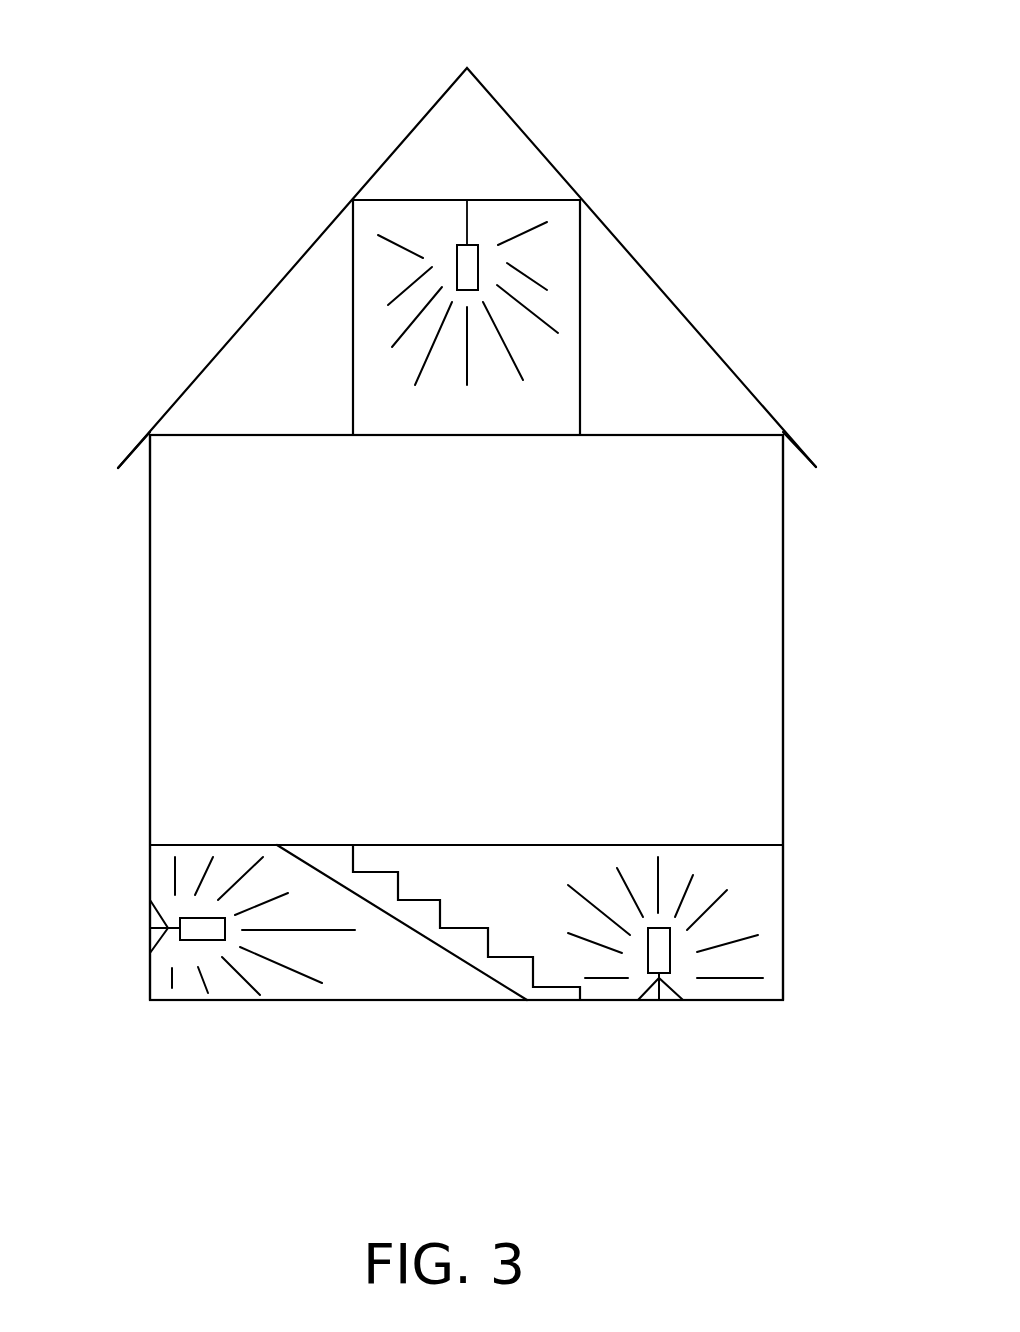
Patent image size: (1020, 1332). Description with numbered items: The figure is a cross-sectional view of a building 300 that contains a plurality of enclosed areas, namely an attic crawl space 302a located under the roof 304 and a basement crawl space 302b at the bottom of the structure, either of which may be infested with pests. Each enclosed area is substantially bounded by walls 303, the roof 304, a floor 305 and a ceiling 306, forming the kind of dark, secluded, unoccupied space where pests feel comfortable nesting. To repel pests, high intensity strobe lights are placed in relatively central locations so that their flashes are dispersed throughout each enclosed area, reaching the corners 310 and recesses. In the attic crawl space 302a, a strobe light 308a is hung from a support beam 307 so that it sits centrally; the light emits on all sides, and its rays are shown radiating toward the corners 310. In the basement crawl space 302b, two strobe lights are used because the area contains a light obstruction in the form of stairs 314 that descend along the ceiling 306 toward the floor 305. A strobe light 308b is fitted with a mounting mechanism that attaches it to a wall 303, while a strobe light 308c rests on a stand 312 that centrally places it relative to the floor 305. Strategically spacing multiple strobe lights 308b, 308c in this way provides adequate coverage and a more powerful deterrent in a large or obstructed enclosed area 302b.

The building 300 is at (123, 76).
The attic crawl space 302a is at (332, 376).
The basement crawl space 302b is at (535, 897).
The wall 303 is at (150, 873).
The roof 304 is at (308, 248).
The floor 305 is at (513, 437).
The ceiling 306 is at (352, 328).
The support beam 307 is at (490, 198).
The strobe light 308a is at (466, 266).
The strobe light 308b is at (226, 929).
The strobe light 308c is at (648, 958).
The corner 310 is at (197, 423).
The stand 312 is at (646, 997).
The stairs 314 is at (333, 855).